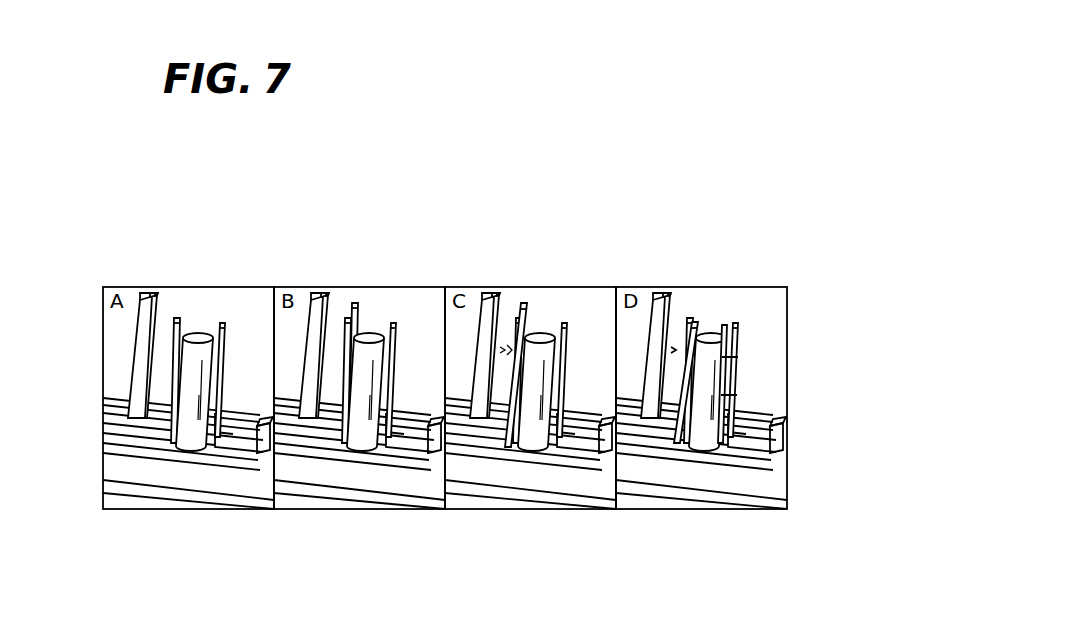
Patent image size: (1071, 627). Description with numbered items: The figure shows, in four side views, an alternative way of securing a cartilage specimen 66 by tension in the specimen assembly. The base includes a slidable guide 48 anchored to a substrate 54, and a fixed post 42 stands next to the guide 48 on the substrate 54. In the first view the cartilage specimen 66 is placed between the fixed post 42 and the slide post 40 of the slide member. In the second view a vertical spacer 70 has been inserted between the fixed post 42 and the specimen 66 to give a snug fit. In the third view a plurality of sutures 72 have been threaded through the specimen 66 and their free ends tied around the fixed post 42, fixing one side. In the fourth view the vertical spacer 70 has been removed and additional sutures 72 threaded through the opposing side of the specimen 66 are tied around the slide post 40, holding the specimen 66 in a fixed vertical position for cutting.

In FIG. 7A, the slide post 40 is at (220, 315).
In FIG. 7B, the slide post 40 is at (411, 296).
In FIG. 7C, the slide post 40 is at (592, 302).
In FIG. 7D, the slide post 40 is at (777, 303).
In FIG. 7A, the fixed post 42 is at (138, 299).
In FIG. 7B, the fixed post 42 is at (318, 291).
In FIG. 7C, the fixed post 42 is at (496, 305).
In FIG. 7D, the fixed post 42 is at (704, 297).
In FIG. 7A, the guide 48 is at (40, 308).
In FIG. 7B, the guide 48 is at (302, 315).
In FIG. 7C, the guide 48 is at (471, 314).
In FIG. 7D, the guide 48 is at (658, 271).
In FIG. 7A, the substrate 54 is at (123, 478).
In FIG. 7B, the substrate 54 is at (359, 500).
In FIG. 7C, the substrate 54 is at (530, 500).
In FIG. 7D, the substrate 54 is at (701, 498).
In FIG. 7A, the cartilage specimen 66 is at (190, 292).
In FIG. 7B, the cartilage specimen 66 is at (374, 289).
In FIG. 7C, the cartilage specimen 66 is at (558, 290).
In FIG. 7D, the cartilage specimen 66 is at (735, 290).
In FIG. 7B, the vertical spacer 70 is at (341, 267).
In FIG. 7C, the vertical spacer 70 is at (521, 272).
In FIG. 7D, the vertical spacer 70 is at (686, 382).
In FIG. 7C, the sutures 72 is at (486, 467).
In FIG. 7D, the sutures 72 is at (752, 456).